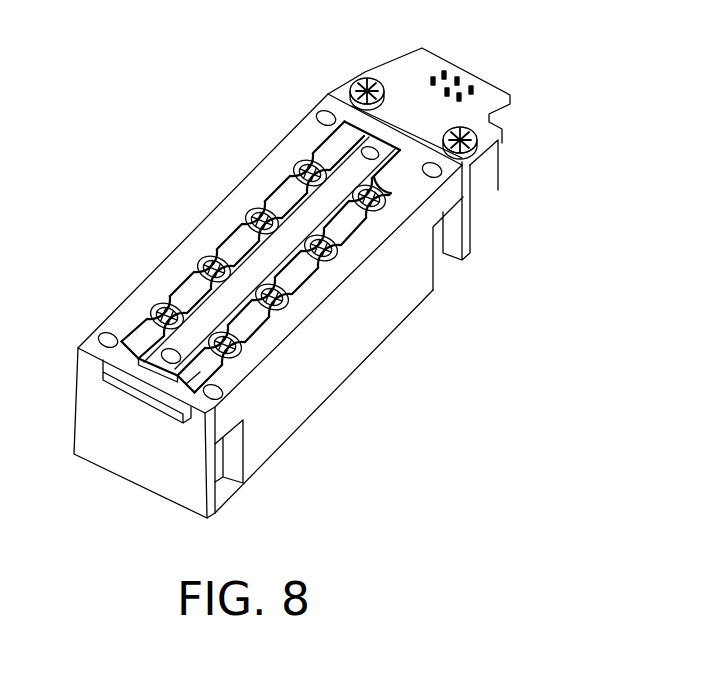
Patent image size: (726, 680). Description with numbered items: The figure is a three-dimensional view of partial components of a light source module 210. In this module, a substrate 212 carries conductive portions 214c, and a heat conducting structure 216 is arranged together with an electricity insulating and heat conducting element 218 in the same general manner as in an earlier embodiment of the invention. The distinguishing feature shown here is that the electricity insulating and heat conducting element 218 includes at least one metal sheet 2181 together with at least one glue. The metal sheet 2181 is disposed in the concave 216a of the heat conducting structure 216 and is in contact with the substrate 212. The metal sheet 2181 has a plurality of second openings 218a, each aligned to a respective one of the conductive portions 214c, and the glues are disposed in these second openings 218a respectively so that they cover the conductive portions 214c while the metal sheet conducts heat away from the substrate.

The light source module 210 is at (500, 225).
The substrate 212 is at (413, 75).
The heat conducting structure 216 is at (330, 372).
The concave 216a is at (159, 411).
The electricity insulating and heat conducting element 218 is at (410, 131).
The second opening 218a is at (157, 309).
The metal sheet 2181 is at (205, 368).
The conductive portion 214c is at (323, 257).